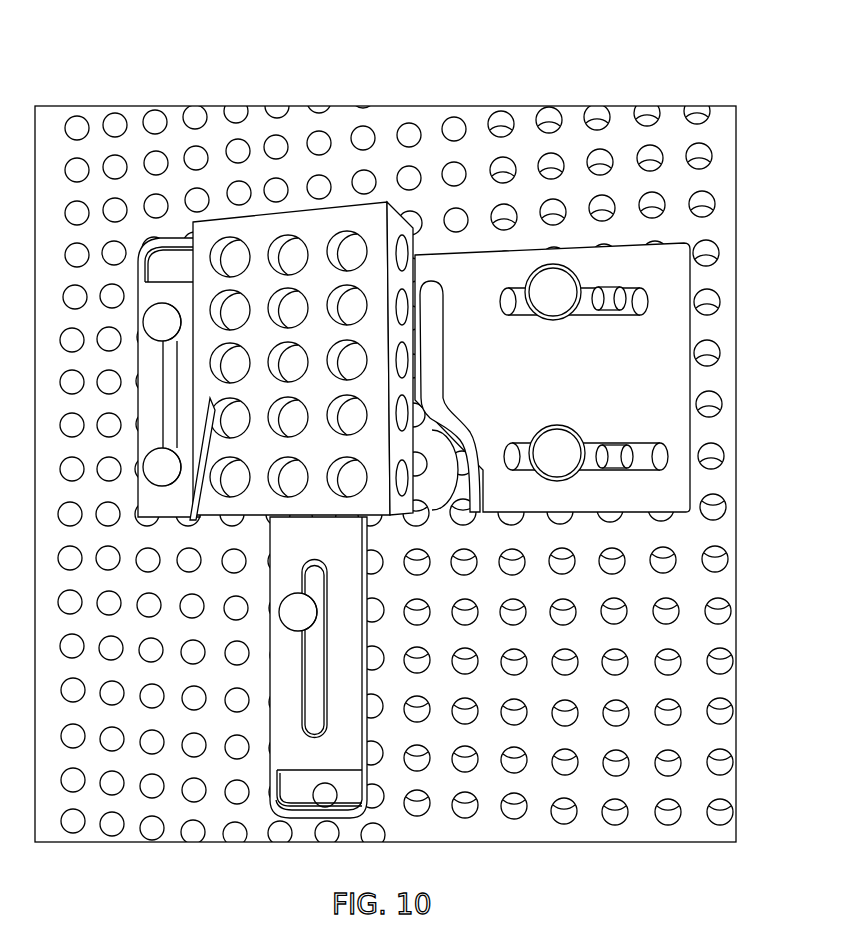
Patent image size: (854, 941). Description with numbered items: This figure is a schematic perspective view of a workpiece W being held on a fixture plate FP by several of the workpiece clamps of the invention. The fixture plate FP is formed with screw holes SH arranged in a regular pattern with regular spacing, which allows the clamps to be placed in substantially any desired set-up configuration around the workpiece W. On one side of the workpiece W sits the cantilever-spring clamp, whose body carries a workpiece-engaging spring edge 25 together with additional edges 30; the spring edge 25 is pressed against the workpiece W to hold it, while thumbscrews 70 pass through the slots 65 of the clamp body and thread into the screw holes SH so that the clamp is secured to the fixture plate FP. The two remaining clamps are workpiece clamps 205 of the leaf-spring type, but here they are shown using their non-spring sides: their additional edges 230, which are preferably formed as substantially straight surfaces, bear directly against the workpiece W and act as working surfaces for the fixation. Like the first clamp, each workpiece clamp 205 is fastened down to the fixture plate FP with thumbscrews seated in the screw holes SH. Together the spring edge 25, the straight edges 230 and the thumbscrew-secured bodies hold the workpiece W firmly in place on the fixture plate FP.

The fixture plate FP is at (521, 128).
The screw holes SH is at (659, 824).
The workpiece W is at (216, 215).
The workpiece-engaging spring edge 25 is at (412, 332).
The additional edges 30 is at (573, 246).
The slots 65 is at (612, 300).
The thumbscrews 70 is at (572, 278).
The workpiece clamp 205 is at (136, 400).
The additional edges 230 is at (205, 410).